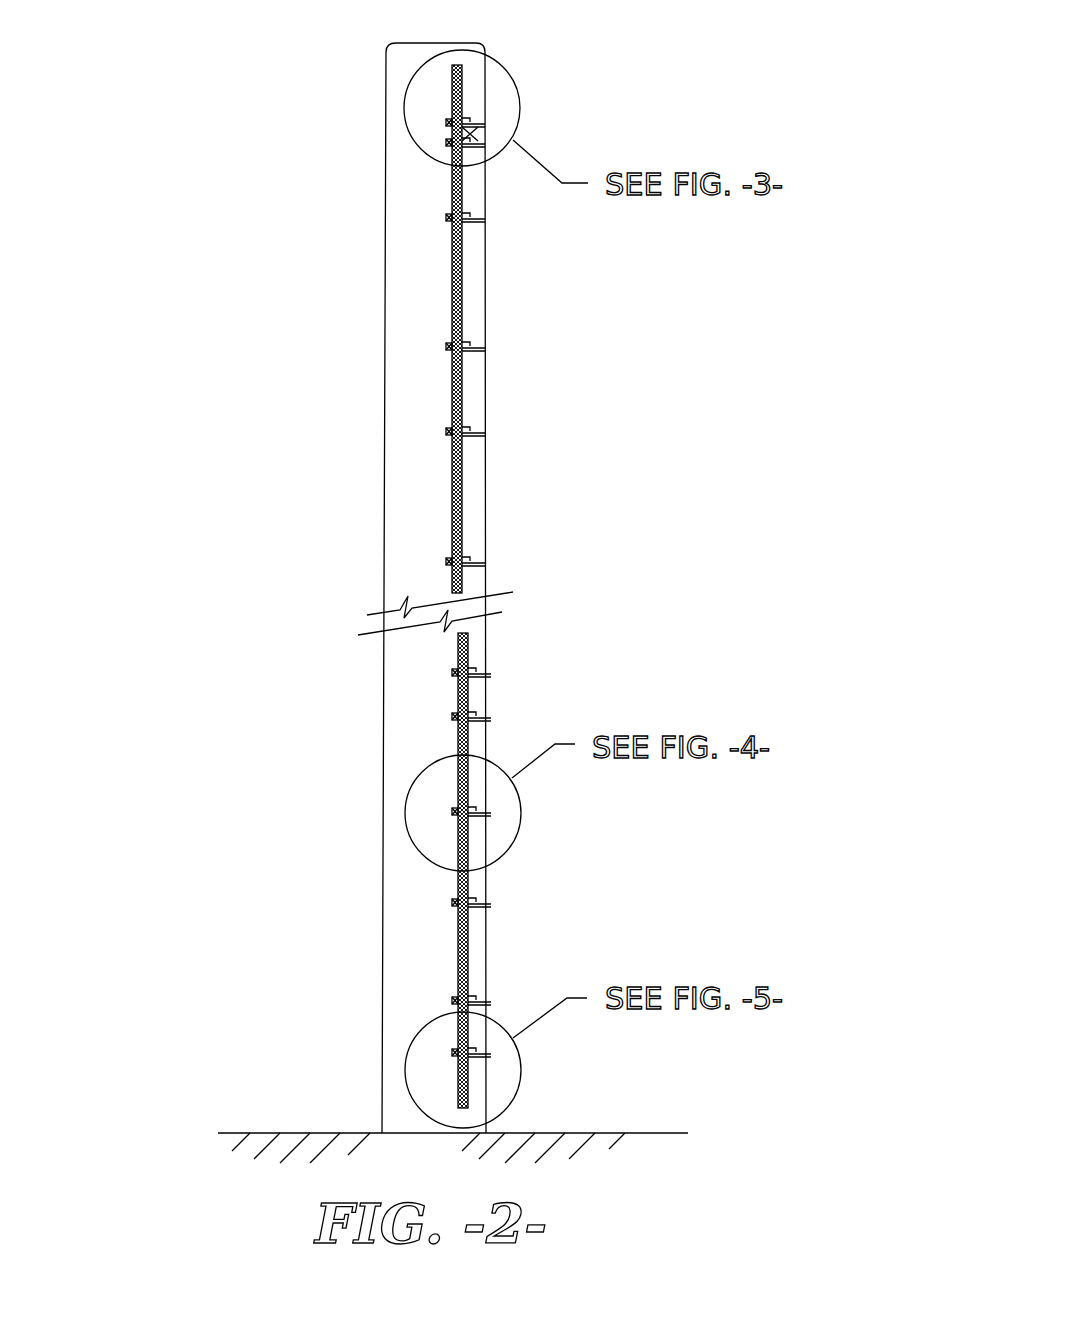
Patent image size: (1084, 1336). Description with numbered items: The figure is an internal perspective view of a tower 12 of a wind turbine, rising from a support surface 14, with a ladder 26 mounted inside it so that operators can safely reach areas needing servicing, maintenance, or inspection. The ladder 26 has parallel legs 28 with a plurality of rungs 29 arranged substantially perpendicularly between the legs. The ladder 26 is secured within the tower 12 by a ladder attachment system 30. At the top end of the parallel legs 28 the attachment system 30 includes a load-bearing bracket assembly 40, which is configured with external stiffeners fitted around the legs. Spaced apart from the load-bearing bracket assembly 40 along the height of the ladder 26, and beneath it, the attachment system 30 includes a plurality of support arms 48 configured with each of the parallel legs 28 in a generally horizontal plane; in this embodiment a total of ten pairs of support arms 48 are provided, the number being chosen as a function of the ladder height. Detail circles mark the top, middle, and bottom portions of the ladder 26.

The tower 12 is at (379, 242).
The support surface 14 is at (310, 1133).
The ladder 26 is at (399, 586).
The parallel legs 28 is at (450, 388).
The rungs 29 is at (450, 315).
The ladder attachment system 30 is at (683, 87).
The load-bearing bracket assembly 40 is at (477, 111).
The support arm 48 is at (476, 565).